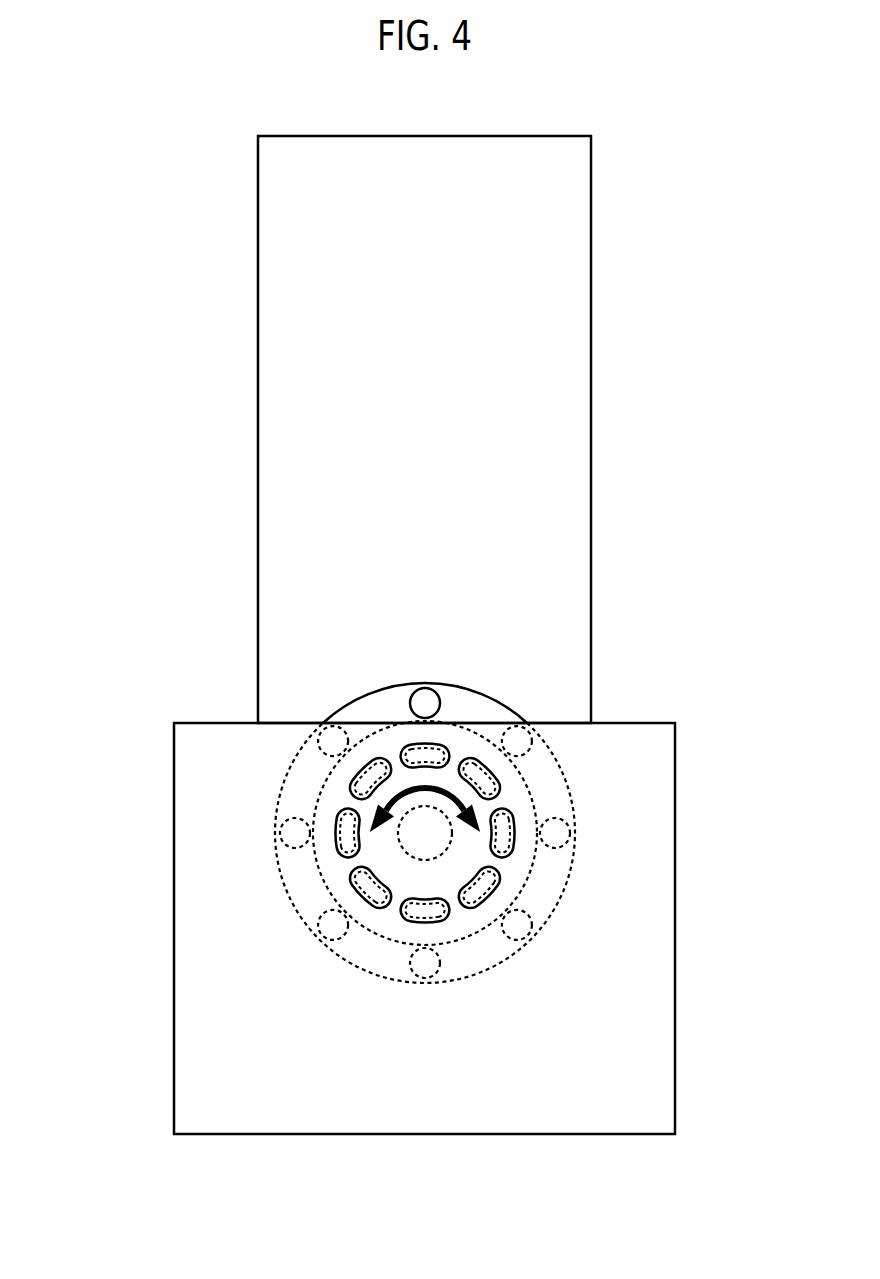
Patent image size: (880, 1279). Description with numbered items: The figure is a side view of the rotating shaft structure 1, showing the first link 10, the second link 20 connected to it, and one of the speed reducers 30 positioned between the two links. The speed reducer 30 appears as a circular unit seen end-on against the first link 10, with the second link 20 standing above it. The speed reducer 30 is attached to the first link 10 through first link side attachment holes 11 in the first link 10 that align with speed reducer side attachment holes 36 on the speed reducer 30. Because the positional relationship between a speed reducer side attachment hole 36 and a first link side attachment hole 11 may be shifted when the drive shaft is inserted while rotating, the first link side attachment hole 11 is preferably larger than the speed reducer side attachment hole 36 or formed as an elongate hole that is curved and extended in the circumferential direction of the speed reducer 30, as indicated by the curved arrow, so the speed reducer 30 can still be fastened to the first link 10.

The rotating shaft structure 1 is at (146, 338).
The first link 10 is at (625, 1073).
The second link 20 is at (545, 236).
The speed reducer 30 is at (500, 693).
The first link side attachment hole 11 is at (512, 812).
The speed reducer side attachment hole 36 is at (510, 857).